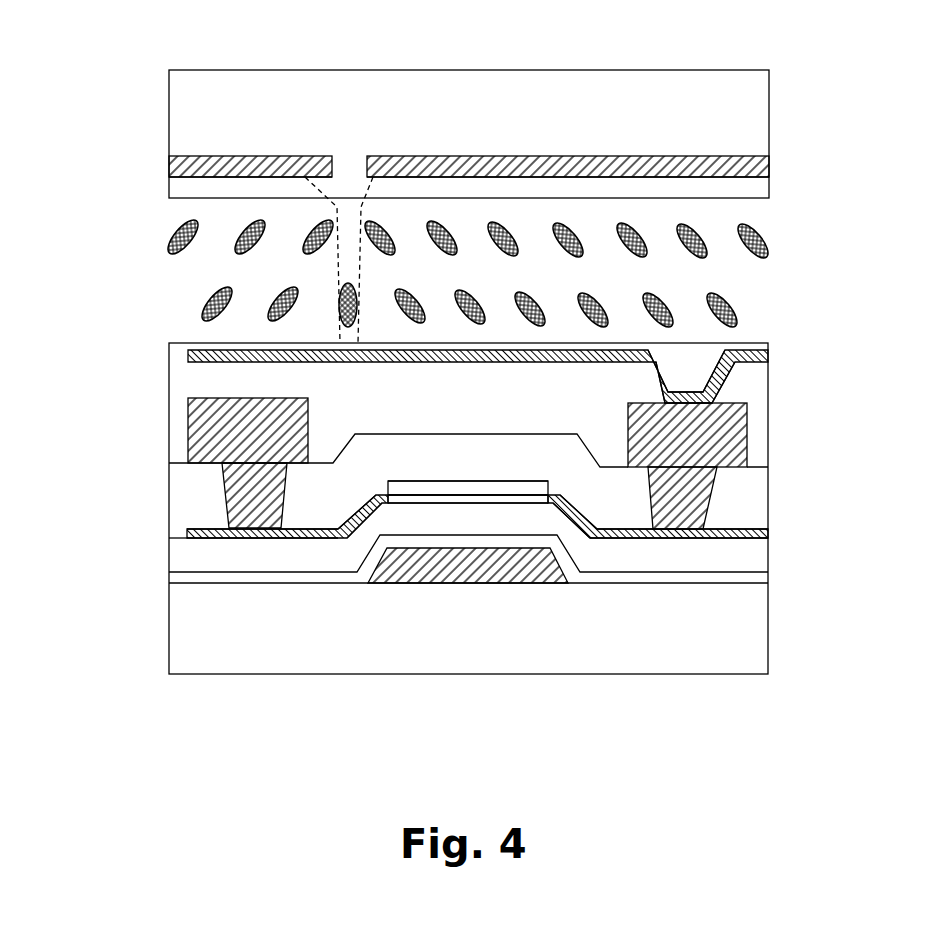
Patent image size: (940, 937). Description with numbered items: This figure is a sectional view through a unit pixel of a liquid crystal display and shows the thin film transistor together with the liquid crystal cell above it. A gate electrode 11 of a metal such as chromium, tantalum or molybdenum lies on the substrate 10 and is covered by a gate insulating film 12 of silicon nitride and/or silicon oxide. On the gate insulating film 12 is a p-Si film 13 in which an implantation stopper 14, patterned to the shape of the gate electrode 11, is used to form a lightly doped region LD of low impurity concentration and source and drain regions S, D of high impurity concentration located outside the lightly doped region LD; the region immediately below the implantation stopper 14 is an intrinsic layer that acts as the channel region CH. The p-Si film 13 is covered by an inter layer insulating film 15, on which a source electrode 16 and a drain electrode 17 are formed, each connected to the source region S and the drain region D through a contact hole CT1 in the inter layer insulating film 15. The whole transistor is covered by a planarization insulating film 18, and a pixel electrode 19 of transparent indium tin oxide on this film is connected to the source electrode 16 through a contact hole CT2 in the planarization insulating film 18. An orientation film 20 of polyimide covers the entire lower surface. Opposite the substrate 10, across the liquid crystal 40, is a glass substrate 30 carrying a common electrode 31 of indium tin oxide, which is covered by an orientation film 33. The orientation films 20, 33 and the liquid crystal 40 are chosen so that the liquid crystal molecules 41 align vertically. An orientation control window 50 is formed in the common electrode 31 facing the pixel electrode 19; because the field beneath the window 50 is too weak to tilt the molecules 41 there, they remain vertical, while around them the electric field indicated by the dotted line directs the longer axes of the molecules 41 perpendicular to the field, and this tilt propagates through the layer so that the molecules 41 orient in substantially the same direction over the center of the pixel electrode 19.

The substrate 10 is at (755, 635).
The gate electrode 11 is at (500, 587).
The gate insulating film 12 is at (215, 565).
The p-Si film 13 is at (745, 538).
The implantation stopper 14 is at (386, 497).
The inter layer insulating film 15 is at (385, 487).
The source electrode 16 is at (745, 403).
The drain electrode 17 is at (345, 466).
The planarization insulating film 18 is at (200, 383).
The pixel electrode 19 is at (660, 347).
The orientation film 20 is at (172, 343).
The glass substrate 30 is at (177, 103).
The common electrode 31 is at (170, 158).
The orientation film 33 is at (175, 188).
The liquid crystal 40 is at (186, 273).
The liquid crystal molecules 41 is at (181, 227).
The orientation control window 50 is at (348, 168).
The channel region CH is at (180, 463).
The contact hole CT1 is at (225, 494).
The contact hole CT2 is at (722, 367).
The drain region D is at (215, 538).
The source region S is at (703, 548).
The lightly doped region LD is at (337, 543).